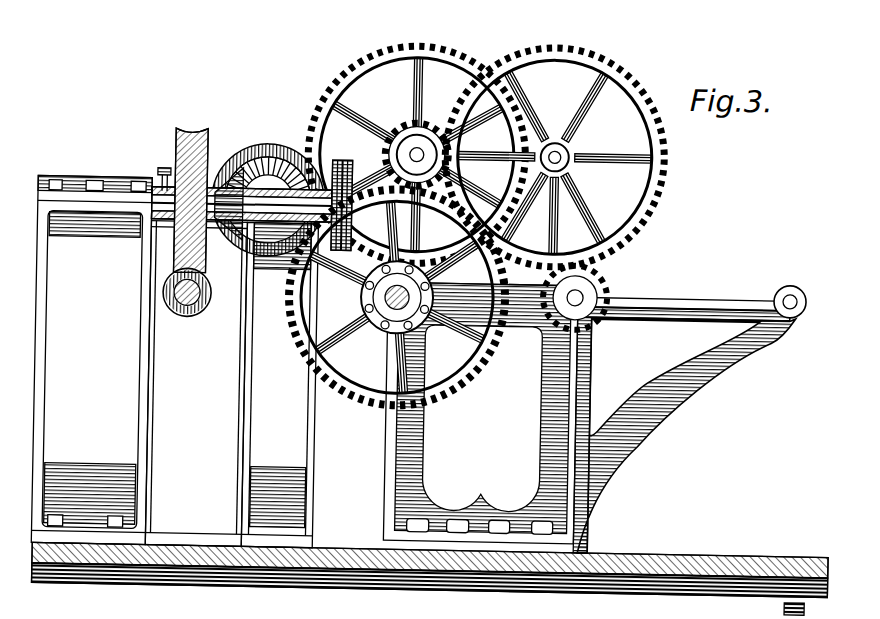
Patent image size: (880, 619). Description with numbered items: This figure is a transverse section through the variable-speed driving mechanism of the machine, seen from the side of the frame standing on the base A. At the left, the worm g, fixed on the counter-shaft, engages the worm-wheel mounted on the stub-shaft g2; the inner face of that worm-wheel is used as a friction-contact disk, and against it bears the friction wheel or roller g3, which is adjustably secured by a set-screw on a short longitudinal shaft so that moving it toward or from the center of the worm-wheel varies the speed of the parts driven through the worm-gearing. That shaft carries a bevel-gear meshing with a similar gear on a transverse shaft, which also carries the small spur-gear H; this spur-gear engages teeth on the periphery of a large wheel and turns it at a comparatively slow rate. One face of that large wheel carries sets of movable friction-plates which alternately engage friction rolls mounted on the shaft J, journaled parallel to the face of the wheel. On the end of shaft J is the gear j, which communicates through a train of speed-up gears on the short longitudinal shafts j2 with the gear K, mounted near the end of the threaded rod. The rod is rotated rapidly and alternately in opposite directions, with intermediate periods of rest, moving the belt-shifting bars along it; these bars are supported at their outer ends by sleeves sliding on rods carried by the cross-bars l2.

The bed A is at (743, 556).
The worm g is at (186, 310).
The stub-shaft g2 is at (151, 237).
The friction wheel or roller g3 is at (258, 146).
The small spur-gear H is at (312, 150).
The gear j is at (365, 394).
The short longitudinal shafts j2 is at (416, 153).
The shaft J is at (394, 311).
The gear K is at (685, 407).
The cross-bars l2 is at (695, 292).